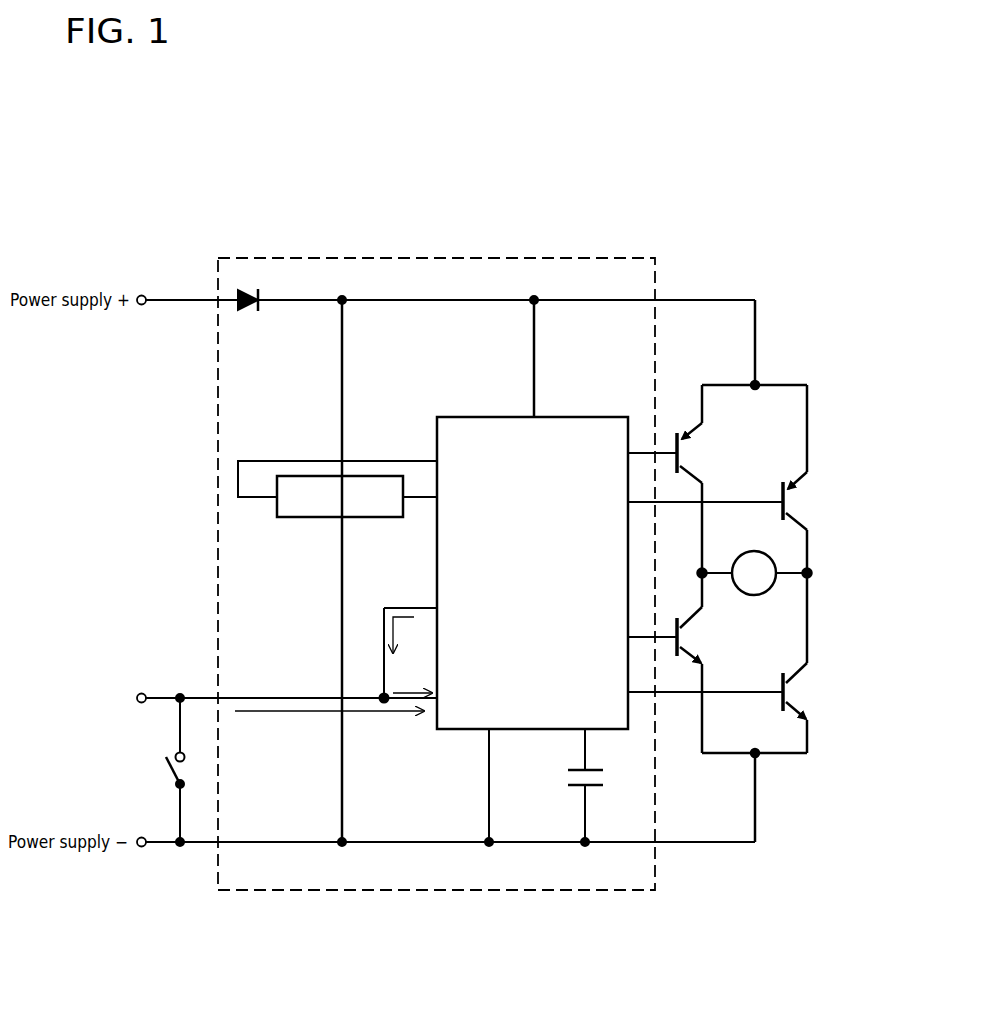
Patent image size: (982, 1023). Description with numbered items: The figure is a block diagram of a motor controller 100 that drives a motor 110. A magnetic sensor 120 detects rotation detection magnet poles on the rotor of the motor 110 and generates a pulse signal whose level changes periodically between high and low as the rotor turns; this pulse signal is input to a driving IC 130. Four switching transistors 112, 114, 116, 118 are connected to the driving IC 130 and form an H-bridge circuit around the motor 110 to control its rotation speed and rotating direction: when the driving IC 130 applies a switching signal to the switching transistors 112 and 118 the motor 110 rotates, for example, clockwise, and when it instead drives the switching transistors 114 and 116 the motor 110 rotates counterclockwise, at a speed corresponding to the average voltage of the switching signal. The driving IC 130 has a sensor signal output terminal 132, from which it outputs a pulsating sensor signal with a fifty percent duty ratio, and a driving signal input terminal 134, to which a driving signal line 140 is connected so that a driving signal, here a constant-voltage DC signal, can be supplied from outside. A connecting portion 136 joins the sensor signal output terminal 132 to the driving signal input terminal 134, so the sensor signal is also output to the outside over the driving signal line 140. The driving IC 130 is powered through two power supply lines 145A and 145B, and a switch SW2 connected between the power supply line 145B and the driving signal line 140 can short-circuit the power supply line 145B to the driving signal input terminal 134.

The motor controller 100 is at (279, 185).
The motor 110 is at (778, 563).
The switching transistor 112 is at (686, 451).
The switching transistor 114 is at (797, 503).
The switching transistor 116 is at (686, 637).
The switching transistor 118 is at (793, 693).
The magnetic sensor 120 is at (297, 512).
The driving IC 130 is at (466, 421).
The sensor signal output terminal 132 is at (438, 606).
The driving signal input terminal 134 is at (438, 697).
The connecting portion 136 is at (383, 695).
The driving signal line 140 is at (245, 696).
The power supply line 145A is at (165, 298).
The power supply line 145B is at (158, 856).
The switch SW2 is at (157, 765).